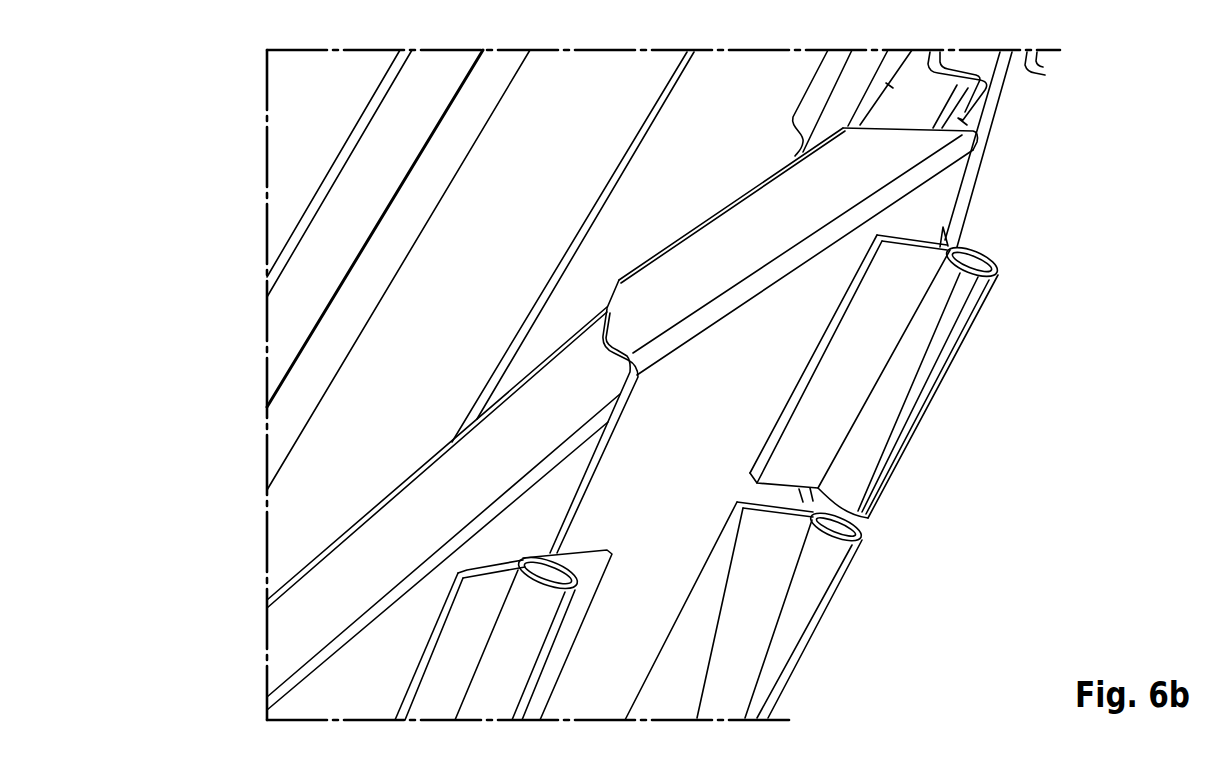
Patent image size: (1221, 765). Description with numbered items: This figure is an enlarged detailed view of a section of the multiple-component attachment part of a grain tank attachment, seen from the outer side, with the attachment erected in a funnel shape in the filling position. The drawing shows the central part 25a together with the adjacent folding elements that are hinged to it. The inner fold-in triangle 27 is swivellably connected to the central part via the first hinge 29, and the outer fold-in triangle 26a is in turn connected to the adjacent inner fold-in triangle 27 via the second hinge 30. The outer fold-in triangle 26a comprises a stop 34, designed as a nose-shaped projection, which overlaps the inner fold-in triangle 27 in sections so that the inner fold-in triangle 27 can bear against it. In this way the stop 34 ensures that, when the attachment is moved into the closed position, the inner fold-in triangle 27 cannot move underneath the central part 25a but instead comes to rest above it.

The central part 25a is at (762, 95).
The outer fold-in triangle 26a is at (352, 578).
The inner fold-in triangle 27 is at (843, 183).
The first hinge 29 is at (905, 382).
The second hinge 30 is at (515, 650).
The stop 34 is at (590, 300).